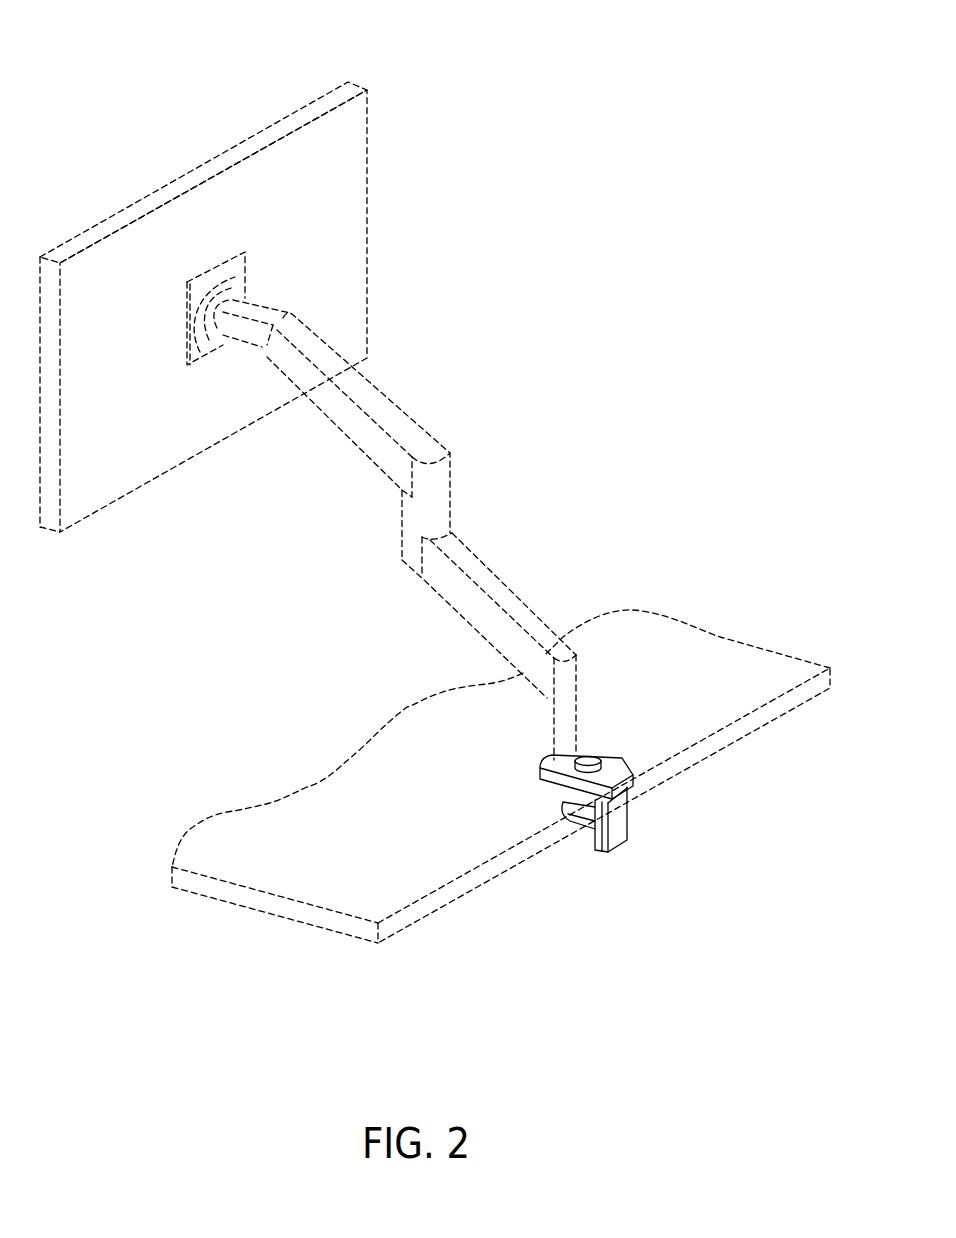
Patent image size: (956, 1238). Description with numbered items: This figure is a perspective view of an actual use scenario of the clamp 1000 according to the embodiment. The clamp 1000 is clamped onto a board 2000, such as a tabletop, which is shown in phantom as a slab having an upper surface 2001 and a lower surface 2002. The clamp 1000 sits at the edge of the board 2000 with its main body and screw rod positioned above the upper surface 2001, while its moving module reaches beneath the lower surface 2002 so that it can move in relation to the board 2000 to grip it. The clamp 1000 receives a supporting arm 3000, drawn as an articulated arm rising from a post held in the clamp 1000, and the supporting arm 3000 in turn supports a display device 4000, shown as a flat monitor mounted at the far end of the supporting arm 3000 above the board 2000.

The clamp 1000 is at (617, 837).
The board 2000 is at (720, 640).
The upper surface 2001 is at (322, 893).
The lower surface 2002 is at (330, 930).
The supporting arm 3000 is at (483, 573).
The display device 4000 is at (350, 253).